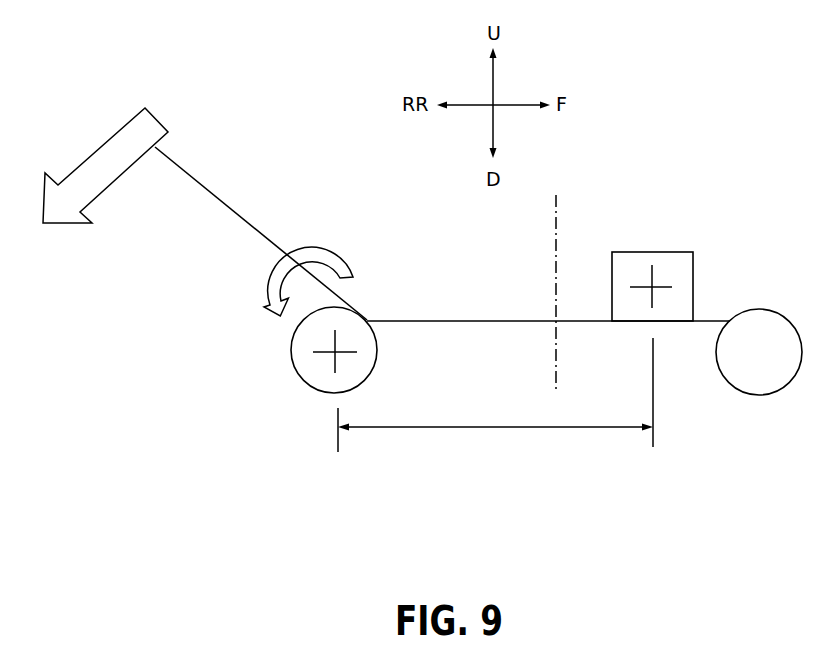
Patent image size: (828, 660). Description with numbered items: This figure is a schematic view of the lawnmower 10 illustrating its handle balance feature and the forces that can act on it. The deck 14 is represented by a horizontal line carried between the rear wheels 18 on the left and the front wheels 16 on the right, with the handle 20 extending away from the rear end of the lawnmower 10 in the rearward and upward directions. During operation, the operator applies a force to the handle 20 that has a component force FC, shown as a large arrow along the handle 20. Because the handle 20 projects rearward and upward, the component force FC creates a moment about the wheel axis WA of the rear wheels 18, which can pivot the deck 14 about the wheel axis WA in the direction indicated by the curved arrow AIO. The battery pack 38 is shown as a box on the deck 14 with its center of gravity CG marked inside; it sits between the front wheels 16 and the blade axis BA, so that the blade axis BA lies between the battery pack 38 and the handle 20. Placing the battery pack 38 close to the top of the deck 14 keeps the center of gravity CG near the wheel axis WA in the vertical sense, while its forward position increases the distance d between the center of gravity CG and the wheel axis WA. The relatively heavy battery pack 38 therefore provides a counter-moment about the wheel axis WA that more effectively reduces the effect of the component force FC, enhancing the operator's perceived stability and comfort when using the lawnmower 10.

The lawnmower 10 is at (652, 104).
The deck 14 is at (477, 323).
The front wheels 16 is at (792, 381).
The rear wheels 18 is at (304, 379).
The handle 20 is at (231, 206).
The battery pack 38 is at (692, 249).
The component force FC is at (119, 134).
The arrow AIO is at (337, 248).
The wheel axis WA is at (335, 352).
The blade axis BA is at (557, 207).
The center of gravity CG is at (652, 285).
The distance d is at (493, 428).